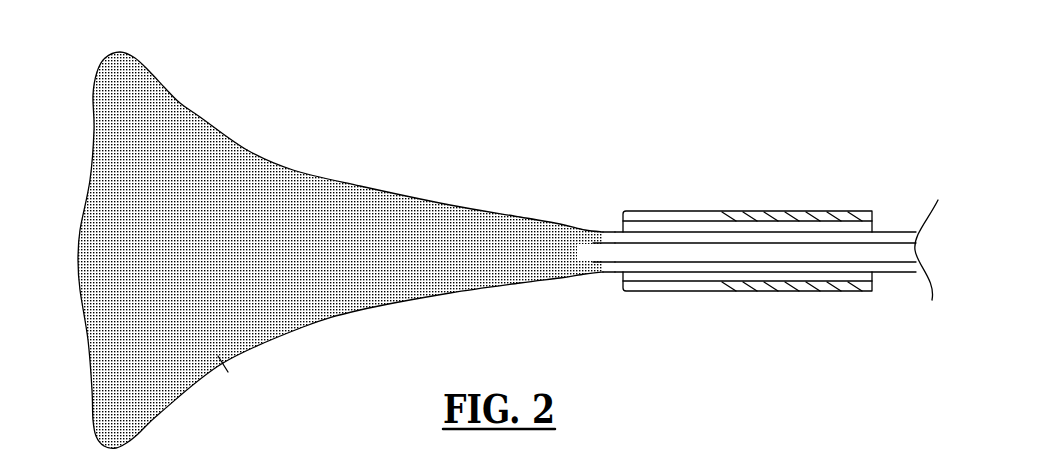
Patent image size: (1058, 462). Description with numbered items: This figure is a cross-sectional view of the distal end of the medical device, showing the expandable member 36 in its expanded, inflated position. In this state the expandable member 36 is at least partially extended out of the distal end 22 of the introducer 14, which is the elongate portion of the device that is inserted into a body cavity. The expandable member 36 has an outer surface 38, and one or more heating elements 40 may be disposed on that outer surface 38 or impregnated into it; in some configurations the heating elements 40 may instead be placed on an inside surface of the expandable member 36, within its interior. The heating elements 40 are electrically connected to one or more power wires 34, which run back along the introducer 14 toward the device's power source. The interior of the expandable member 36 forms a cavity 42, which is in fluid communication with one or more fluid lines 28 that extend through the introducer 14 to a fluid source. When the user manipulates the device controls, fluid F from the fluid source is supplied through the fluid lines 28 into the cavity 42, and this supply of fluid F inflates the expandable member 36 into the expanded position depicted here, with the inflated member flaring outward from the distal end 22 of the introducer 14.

The expandable member 36 is at (295, 62).
The outer surface 38 is at (287, 198).
The heating elements 40 is at (365, 223).
The cavity 42 is at (302, 307).
The fluid F is at (217, 330).
The power wires 34 is at (607, 231).
The distal end 22 is at (678, 210).
The introducer 14 is at (808, 218).
The fluid lines 28 is at (745, 252).